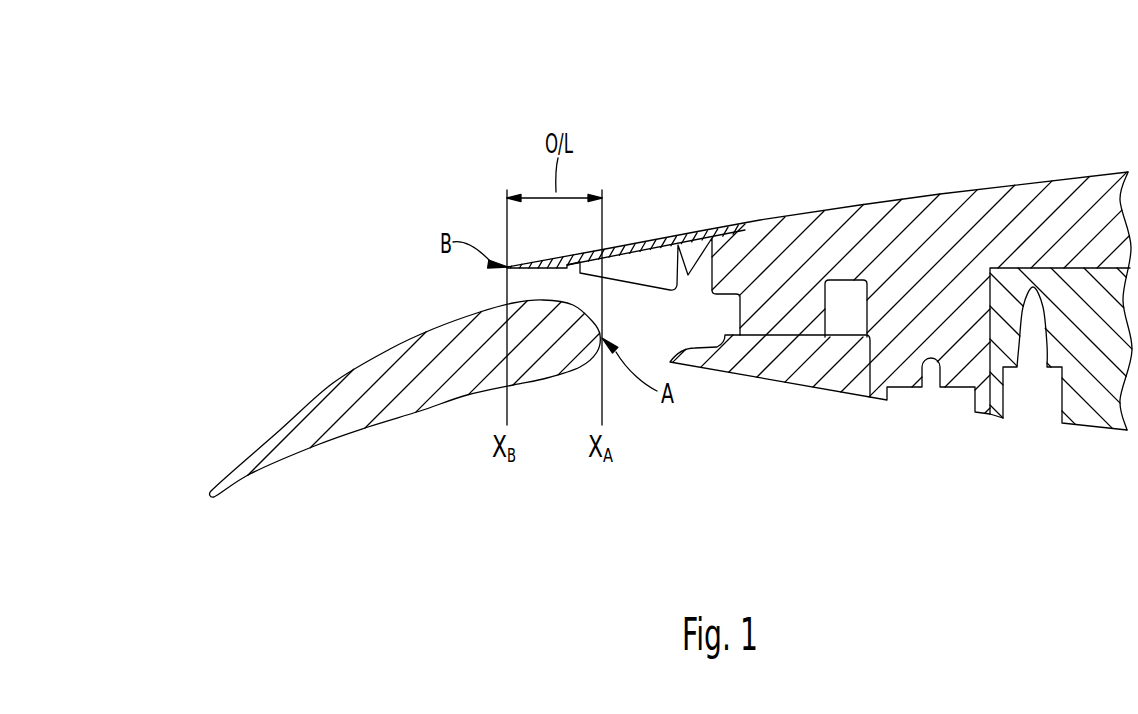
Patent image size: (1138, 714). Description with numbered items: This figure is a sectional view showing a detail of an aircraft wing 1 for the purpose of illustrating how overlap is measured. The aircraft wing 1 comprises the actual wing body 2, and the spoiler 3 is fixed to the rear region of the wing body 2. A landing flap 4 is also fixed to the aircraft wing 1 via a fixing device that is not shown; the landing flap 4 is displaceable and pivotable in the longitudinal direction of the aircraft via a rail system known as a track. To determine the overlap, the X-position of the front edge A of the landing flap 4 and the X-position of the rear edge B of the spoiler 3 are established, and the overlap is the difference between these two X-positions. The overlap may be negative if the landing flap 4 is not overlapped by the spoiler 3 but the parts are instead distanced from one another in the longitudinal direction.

The aircraft wing 1 is at (1090, 86).
The wing body 2 is at (952, 208).
The spoiler 3 is at (640, 248).
The landing flap 4 is at (360, 393).